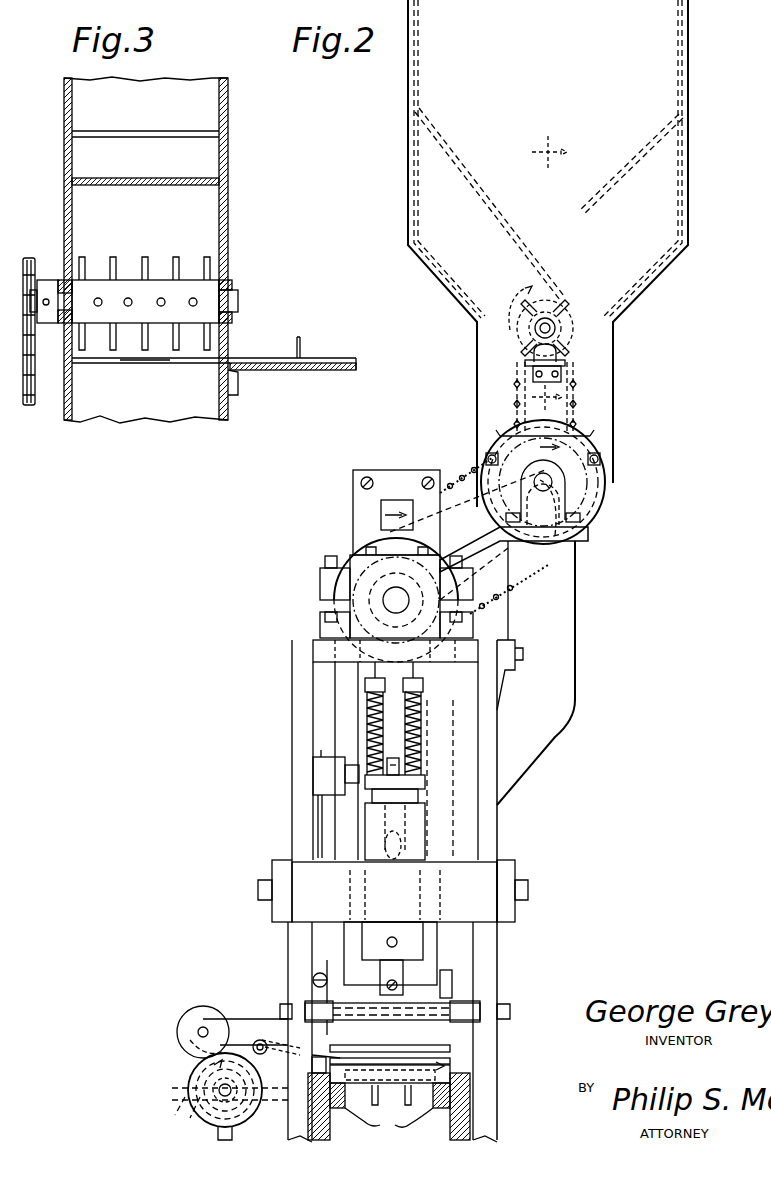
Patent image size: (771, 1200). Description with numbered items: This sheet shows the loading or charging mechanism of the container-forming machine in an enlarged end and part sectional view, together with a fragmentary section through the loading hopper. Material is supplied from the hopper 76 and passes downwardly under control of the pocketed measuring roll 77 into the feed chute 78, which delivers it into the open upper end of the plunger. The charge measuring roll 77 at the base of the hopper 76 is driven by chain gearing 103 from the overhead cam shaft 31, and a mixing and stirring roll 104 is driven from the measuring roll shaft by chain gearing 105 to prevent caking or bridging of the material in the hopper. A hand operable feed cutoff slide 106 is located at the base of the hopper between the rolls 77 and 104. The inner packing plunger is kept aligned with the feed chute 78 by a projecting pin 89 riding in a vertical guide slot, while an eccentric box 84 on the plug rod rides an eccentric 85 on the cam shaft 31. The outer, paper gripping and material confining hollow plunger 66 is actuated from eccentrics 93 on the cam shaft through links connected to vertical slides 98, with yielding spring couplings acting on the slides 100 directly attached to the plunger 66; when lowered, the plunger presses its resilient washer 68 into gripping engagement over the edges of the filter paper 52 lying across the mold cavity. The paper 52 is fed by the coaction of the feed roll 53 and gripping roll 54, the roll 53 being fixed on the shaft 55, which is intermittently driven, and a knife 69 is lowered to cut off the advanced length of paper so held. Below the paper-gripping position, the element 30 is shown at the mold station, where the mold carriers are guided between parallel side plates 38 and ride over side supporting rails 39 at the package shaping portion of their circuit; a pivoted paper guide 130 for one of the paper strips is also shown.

In FIG. 3, the hopper 76 is at (228, 150).
In FIG. 2, the hopper 76 is at (689, 50).
In FIG. 3, the mixing and stirring roll 104 is at (132, 262).
In FIG. 2, the mixing and stirring roll 104 is at (545, 300).
In FIG. 3, the hand operable feed cutoff slide 106 is at (250, 360).
In FIG. 2, the hand operable feed cutoff slide 106 is at (560, 354).
In FIG. 3, the chain gearing 105 is at (33, 406).
In FIG. 2, the chain gearing 105 is at (574, 402).
In FIG. 2, the eccentric box 84 is at (393, 475).
In FIG. 2, the eccentric 85 is at (345, 535).
In FIG. 2, the overhead cam shaft 31 is at (383, 600).
In FIG. 2, the chain gearing 103 is at (447, 478).
In FIG. 2, the eccentrics 93 is at (488, 540).
In FIG. 2, the pocketed measuring roll 77 is at (578, 556).
In FIG. 2, the feed chute 78 is at (541, 745).
In FIG. 2, the projecting pin 89 is at (345, 802).
In FIG. 2, the hollow plunger 66 is at (345, 943).
In FIG. 2, the vertical slides 98 is at (437, 942).
In FIG. 2, the slides 100 is at (387, 985).
In FIG. 2, the knife 69 is at (327, 968).
In FIG. 2, the resilient washer 68 is at (452, 1048).
In FIG. 2, the filter paper 52 is at (455, 1060).
In FIG. 2, the die 30 is at (452, 1075).
In FIG. 2, the side plates 38 is at (470, 1100).
In FIG. 2, the side supporting rails 39 is at (410, 1120).
In FIG. 2, the gripping roll 54 is at (182, 1022).
In FIG. 2, the feed roll 53 is at (190, 1076).
In FIG. 2, the shaft 55 is at (219, 1091).
In FIG. 2, the paper guide 130 is at (272, 1040).